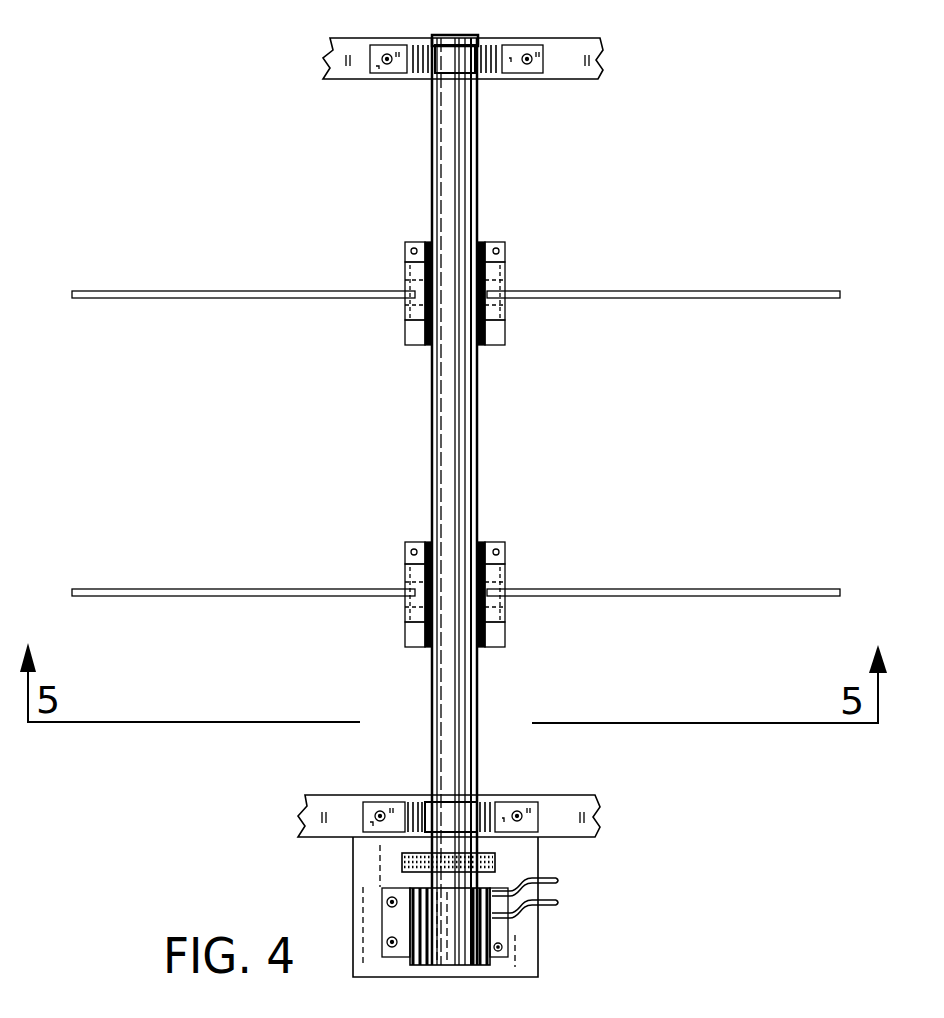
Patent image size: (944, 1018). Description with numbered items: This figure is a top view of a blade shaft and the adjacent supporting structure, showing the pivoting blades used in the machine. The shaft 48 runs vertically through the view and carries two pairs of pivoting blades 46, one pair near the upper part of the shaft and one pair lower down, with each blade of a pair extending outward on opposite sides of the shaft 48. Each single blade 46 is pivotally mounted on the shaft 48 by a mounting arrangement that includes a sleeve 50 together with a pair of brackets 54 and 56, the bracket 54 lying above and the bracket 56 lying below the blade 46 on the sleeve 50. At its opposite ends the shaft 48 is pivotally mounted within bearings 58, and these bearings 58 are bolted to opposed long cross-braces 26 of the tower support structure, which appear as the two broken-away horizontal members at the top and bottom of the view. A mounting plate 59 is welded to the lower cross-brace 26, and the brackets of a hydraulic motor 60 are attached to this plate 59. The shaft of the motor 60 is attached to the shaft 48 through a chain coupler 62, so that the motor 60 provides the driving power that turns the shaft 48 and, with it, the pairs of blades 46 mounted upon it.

The long cross-brace 26 is at (595, 60).
The blade 46 is at (176, 298).
The shaft 48 is at (468, 466).
The sleeve 50 is at (402, 279).
The bracket 54 is at (404, 248).
The bracket 56 is at (403, 332).
The bearing 58 is at (514, 52).
The mounting plate 59 is at (530, 968).
The hydraulic motor 60 is at (447, 948).
The chain coupler 62 is at (495, 868).